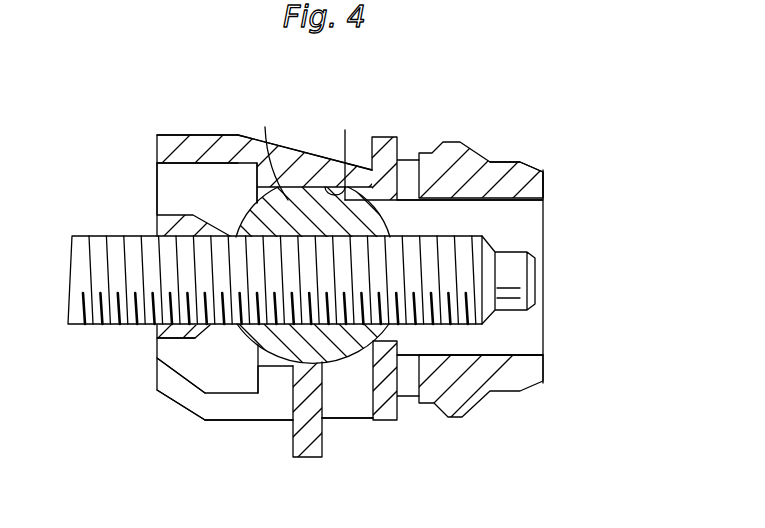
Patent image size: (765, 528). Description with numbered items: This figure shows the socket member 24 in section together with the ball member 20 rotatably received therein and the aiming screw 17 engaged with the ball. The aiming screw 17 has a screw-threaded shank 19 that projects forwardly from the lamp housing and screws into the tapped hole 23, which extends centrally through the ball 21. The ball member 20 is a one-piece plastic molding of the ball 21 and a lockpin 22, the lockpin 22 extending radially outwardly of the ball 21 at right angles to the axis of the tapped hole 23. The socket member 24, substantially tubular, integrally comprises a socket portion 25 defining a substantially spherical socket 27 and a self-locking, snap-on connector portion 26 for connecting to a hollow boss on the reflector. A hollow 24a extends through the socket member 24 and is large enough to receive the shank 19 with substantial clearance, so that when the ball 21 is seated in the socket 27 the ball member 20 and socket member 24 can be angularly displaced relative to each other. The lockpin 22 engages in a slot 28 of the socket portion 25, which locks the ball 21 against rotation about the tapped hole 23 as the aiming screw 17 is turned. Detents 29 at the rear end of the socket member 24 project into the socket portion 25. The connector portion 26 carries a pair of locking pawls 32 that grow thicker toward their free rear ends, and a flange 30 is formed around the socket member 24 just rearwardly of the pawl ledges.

The aiming screw 17 is at (535, 281).
The screw-threaded shank 19 is at (100, 325).
The ball member 20 is at (307, 187).
The ball 21 is at (266, 127).
The lockpin 22 is at (308, 456).
The tapped hole 23 is at (238, 237).
The socket member 24 is at (208, 135).
The hollow 24a is at (498, 200).
The socket portion 25 is at (165, 149).
The self-locking, snap-on connector portion 26 is at (527, 162).
The socket 27 is at (346, 130).
The slot 28 is at (352, 413).
The detents 29 is at (190, 334).
The flange 30 is at (400, 134).
The locking pawls 32 is at (447, 139).